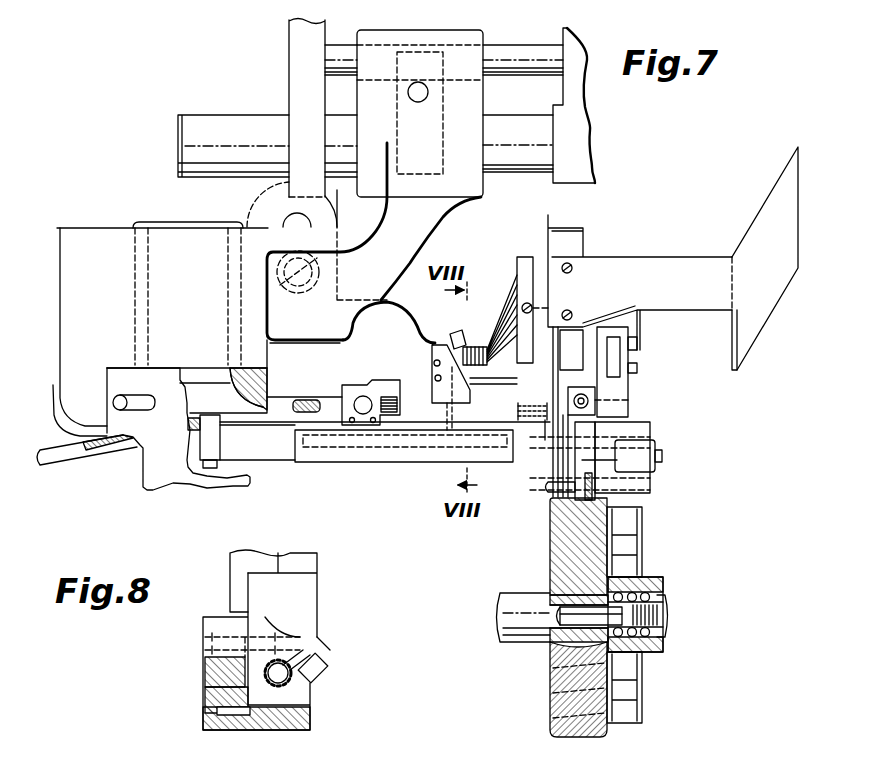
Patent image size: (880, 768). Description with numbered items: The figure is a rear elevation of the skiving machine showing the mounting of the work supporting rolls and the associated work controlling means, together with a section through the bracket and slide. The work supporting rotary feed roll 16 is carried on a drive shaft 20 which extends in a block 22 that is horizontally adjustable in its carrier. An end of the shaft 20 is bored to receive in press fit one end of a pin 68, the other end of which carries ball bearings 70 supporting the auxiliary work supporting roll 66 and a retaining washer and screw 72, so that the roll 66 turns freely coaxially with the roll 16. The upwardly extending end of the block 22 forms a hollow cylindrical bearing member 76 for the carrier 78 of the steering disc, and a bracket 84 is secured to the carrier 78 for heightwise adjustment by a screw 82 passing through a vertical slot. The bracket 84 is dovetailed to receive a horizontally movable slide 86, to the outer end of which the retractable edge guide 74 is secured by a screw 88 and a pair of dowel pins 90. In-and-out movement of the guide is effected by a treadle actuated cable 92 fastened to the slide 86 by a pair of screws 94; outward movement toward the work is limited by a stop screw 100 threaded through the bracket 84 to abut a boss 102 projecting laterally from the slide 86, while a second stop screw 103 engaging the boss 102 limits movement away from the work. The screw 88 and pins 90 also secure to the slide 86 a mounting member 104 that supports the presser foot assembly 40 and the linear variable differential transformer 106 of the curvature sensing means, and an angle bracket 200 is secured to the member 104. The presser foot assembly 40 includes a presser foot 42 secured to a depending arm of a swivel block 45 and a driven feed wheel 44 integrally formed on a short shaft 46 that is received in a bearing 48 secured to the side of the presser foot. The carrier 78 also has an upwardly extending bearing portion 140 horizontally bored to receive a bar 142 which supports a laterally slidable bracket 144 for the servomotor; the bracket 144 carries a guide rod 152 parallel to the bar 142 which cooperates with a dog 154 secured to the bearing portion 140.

In FIG. 7, the feed roll 16 is at (565, 698).
In FIG. 7, the drive shaft 20 is at (525, 600).
In FIG. 7, the block 22 is at (230, 494).
In FIG. 7, the presser foot assembly 40 is at (676, 446).
In FIG. 7, the presser foot 42 is at (650, 483).
In FIG. 7, the feed wheel 44 is at (594, 488).
In FIG. 7, the swivel block 45 is at (617, 415).
In FIG. 7, the short shaft 46 is at (546, 487).
In FIG. 7, the bearing 48 is at (630, 460).
In FIG. 7, the auxiliary work supporting roll 66 is at (640, 552).
In FIG. 7, the pin 68 is at (548, 642).
In FIG. 7, the ball bearings 70 is at (628, 652).
In FIG. 7, the screw 72 is at (663, 615).
In FIG. 7, the edge guide 74 is at (548, 500).
In FIG. 7, the bearing member 76 is at (135, 225).
In FIG. 7, the carrier 78 is at (63, 285).
In FIG. 8, the carrier 78 is at (290, 560).
In FIG. 7, the screw 82 is at (283, 292).
In FIG. 7, the bracket 84 is at (404, 326).
In FIG. 8, the bracket 84 is at (303, 606).
In FIG. 7, the slide 86 is at (356, 385).
In FIG. 8, the slide 86 is at (210, 703).
In FIG. 7, the screw 88 is at (510, 413).
In FIG. 7, the dowel pins 90 is at (520, 390).
In FIG. 7, the cable 92 is at (258, 448).
In FIG. 7, the screws 94 is at (352, 423).
In FIG. 7, the stop screw 100 is at (392, 397).
In FIG. 8, the stop screw 100 is at (290, 683).
In FIG. 7, the boss 102 is at (362, 396).
In FIG. 8, the boss 102 is at (205, 688).
In FIG. 7, the stop screw 103 is at (312, 402).
In FIG. 7, the mounting member 104 is at (555, 372).
In FIG. 7, the linear variable differential transformer 106 is at (512, 258).
In FIG. 7, the bearing portion 140 is at (421, 244).
In FIG. 7, the bar 142 is at (182, 133).
In FIG. 7, the bracket 144 is at (577, 135).
In FIG. 7, the guide rod 152 is at (493, 53).
In FIG. 7, the dog 154 is at (443, 106).
In FIG. 7, the angle bracket 200 is at (617, 262).